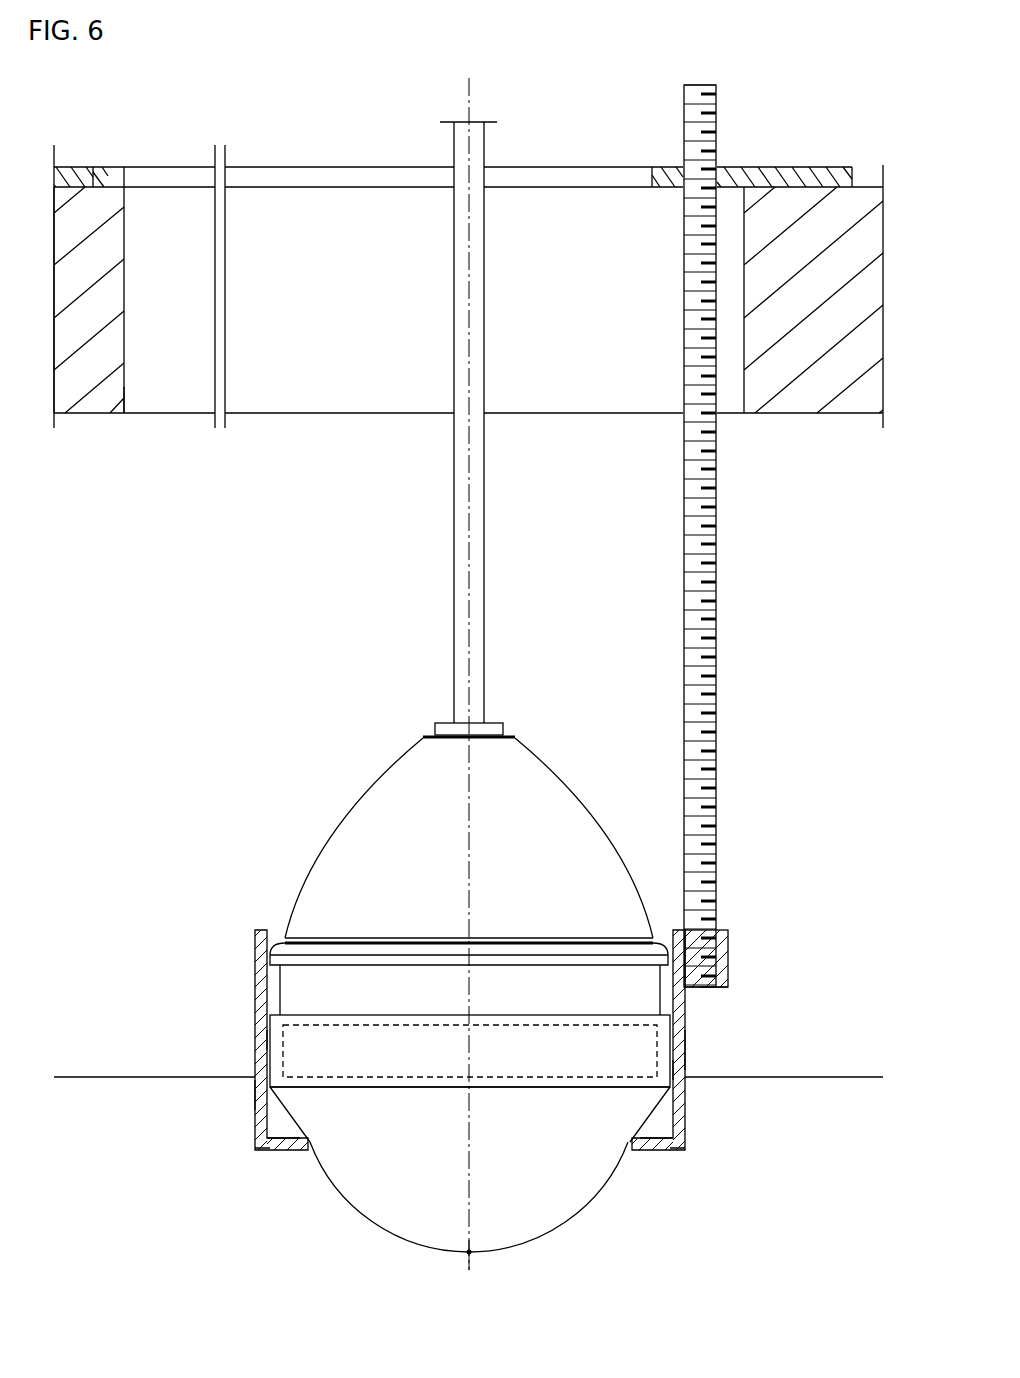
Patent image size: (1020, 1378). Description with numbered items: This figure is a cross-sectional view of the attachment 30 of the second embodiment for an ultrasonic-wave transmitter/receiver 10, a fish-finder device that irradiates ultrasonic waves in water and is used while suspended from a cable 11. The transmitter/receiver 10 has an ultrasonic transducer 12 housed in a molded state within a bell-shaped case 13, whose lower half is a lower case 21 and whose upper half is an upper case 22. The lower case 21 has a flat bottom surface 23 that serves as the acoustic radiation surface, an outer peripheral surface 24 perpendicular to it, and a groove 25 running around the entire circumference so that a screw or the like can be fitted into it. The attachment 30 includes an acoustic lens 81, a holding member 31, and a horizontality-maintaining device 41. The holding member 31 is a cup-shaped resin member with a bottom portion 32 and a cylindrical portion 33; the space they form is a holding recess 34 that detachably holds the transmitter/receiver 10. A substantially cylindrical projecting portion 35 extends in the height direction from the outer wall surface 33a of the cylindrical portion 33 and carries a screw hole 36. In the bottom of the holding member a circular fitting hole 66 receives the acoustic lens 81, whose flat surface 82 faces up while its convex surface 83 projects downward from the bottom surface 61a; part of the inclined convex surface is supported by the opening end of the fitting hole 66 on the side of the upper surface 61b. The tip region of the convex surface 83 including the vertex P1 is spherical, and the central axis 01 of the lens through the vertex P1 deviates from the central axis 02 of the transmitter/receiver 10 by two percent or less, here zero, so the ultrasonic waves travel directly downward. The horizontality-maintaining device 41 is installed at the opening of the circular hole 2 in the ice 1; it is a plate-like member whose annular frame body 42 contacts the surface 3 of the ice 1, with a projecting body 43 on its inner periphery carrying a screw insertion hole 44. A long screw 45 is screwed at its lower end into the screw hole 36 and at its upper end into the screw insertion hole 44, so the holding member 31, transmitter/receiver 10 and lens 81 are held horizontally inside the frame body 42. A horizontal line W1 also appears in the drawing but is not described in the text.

The ice 1 is at (88, 405).
The circular hole 2 is at (122, 412).
The surface 3 is at (106, 185).
The ultrasonic-wave transmitter/receiver 10 is at (470, 996).
The cable 11 is at (455, 565).
The ultrasonic transducer 12 is at (486, 1090).
The case 13 is at (574, 818).
The lower case 21 is at (348, 1088).
The upper case 22 is at (350, 836).
The bottom surface 23 is at (374, 1089).
The outer peripheral surface 24 is at (266, 1041).
The groove 25 is at (540, 972).
The attachment 30 is at (479, 963).
The holding member 31 is at (254, 984).
The bottom portion 32 is at (296, 1151).
The cylindrical portion 33 is at (686, 1050).
The outer wall surface 33a is at (253, 1095).
The holding recess 34 is at (672, 930).
The projecting portion 35 is at (726, 958).
The screw hole 36 is at (716, 986).
The horizontality-maintaining device 41 is at (820, 180).
The frame body 42 is at (84, 164).
The projecting body 43 is at (668, 180).
The screw insertion hole 44 is at (722, 177).
The long screw 45 is at (718, 485).
The bottom surface 61a is at (266, 1152).
The upper surface 61b is at (288, 1136).
The fitting hole 66 is at (636, 1151).
The acoustic lens 81 is at (374, 1190).
The flat surface 82 is at (545, 1086).
The convex surface 83 is at (570, 1205).
The vertex P1 is at (467, 1253).
The central axis 01 is at (472, 1258).
The central axis 02 is at (471, 100).
The water level W1 is at (856, 1077).